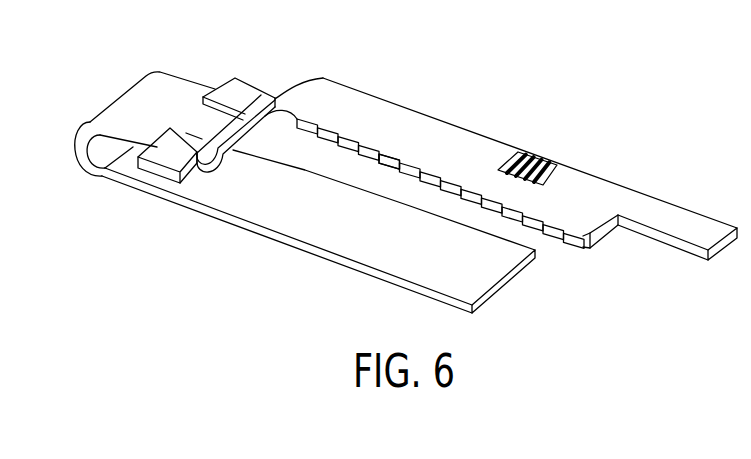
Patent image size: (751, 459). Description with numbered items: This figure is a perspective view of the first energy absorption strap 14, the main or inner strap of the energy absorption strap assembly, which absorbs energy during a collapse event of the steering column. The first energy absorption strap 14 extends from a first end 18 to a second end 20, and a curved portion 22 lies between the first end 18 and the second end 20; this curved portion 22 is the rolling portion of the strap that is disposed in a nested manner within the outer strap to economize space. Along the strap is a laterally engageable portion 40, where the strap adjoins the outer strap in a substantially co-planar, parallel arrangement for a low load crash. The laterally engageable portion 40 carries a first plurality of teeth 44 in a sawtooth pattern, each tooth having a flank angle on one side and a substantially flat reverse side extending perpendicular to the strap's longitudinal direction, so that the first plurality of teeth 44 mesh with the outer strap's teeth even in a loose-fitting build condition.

The first energy absorption strap 14 is at (487, 157).
The first end 18 is at (720, 248).
The second end 20 is at (510, 275).
The curved portion 22 is at (84, 138).
The laterally engageable portion 40 is at (363, 141).
The first plurality of teeth 44 is at (383, 172).